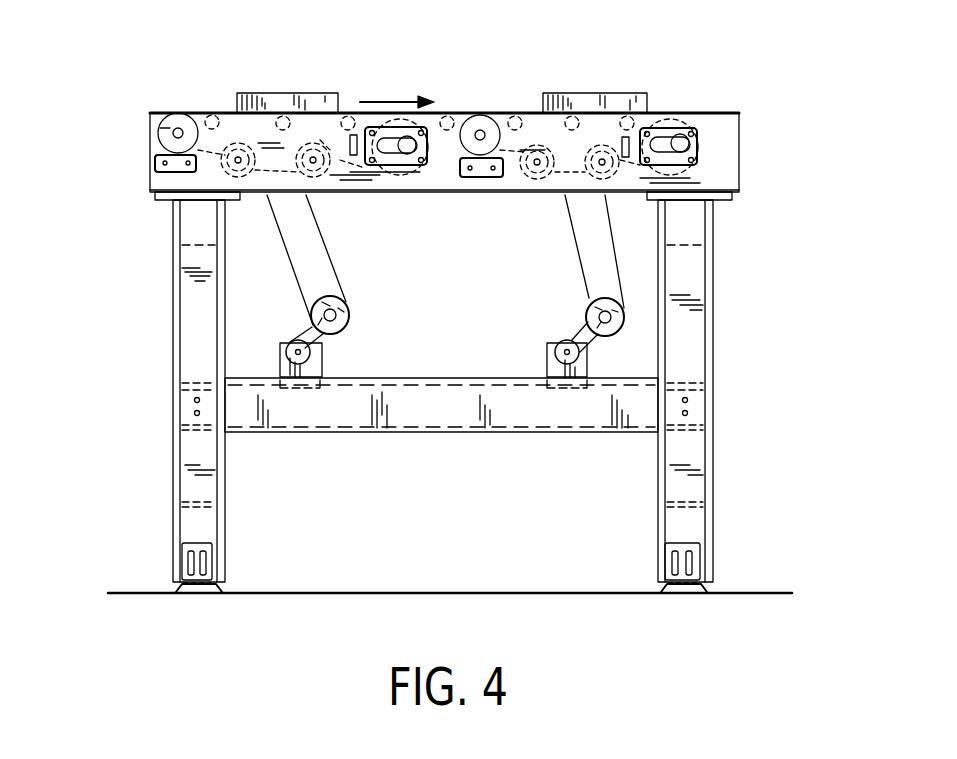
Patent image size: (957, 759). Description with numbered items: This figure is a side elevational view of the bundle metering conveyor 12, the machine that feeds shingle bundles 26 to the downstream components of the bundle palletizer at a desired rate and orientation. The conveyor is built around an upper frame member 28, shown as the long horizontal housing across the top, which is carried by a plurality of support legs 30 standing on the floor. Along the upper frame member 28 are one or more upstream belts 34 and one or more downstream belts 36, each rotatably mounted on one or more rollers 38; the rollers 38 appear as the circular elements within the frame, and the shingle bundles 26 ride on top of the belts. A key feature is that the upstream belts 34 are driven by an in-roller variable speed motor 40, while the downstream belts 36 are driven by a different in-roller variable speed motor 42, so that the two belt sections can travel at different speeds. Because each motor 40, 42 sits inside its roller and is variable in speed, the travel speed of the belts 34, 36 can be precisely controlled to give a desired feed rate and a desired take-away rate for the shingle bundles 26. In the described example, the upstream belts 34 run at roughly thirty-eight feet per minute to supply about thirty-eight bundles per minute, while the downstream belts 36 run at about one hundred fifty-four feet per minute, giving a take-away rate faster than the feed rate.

The bundle metering conveyor 12 is at (755, 145).
The shingle bundles 26 is at (287, 92).
The upper frame member 28 is at (152, 188).
The support legs 30 is at (173, 348).
The upstream belts 34 is at (340, 277).
The downstream belts 36 is at (568, 228).
The rollers 38 is at (172, 112).
The in-roller variable speed motor 40 is at (407, 152).
The in-roller variable speed motor 42 is at (700, 148).